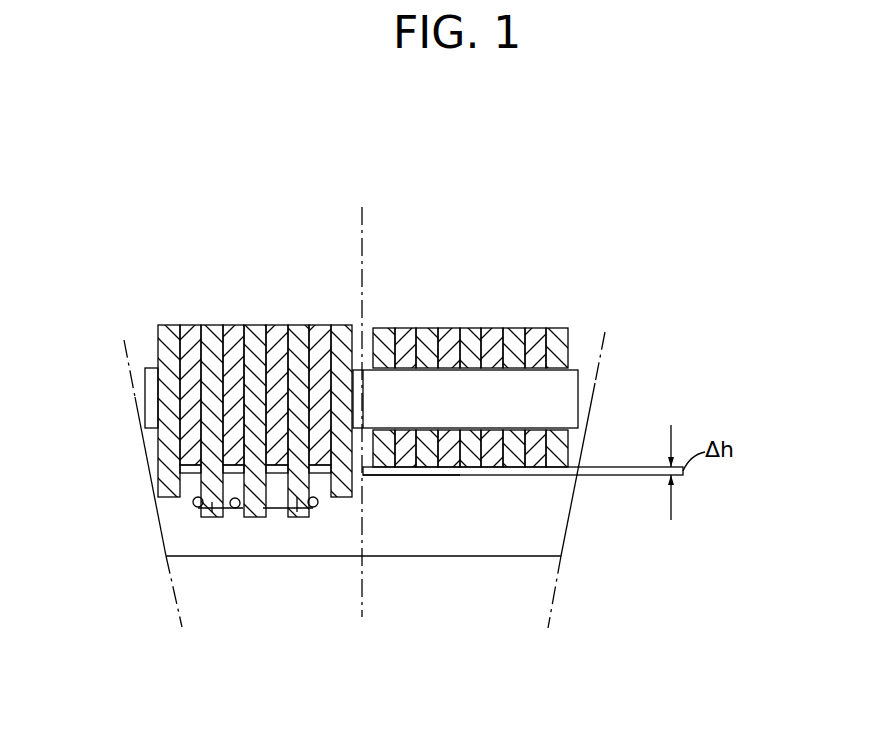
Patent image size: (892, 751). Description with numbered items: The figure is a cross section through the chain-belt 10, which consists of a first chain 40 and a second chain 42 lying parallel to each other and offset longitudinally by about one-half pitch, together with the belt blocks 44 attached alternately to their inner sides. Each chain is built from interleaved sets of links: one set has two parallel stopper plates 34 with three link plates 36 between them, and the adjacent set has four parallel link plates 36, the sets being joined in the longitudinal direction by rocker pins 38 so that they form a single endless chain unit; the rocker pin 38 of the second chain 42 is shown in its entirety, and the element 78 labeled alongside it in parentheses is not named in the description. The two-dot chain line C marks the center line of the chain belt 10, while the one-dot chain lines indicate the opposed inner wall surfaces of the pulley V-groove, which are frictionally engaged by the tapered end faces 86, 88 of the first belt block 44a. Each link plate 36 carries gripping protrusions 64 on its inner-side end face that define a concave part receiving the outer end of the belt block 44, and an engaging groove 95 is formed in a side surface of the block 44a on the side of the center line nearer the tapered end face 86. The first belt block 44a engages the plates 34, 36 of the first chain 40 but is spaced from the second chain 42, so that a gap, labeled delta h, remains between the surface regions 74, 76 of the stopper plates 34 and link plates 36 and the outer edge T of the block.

The chain-belt 10 is at (115, 231).
The stopper plate 34 is at (172, 323).
The link plate 36 is at (192, 323).
The rocker pin 38 is at (153, 367).
The first chain 40 is at (233, 190).
The second chain 42 is at (439, 207).
The belt block 44 is at (485, 542).
The first belt block 44a is at (363, 592).
The gripping protrusion 64 is at (208, 513).
The surface region 74 is at (566, 463).
The surface region 76 is at (403, 475).
The hub flange 78 is at (578, 370).
The tapered end face 86 is at (158, 520).
The tapered end face 88 is at (565, 538).
The engaging groove 95 is at (235, 508).
The center line C is at (363, 396).
The outer edge T is at (549, 478).